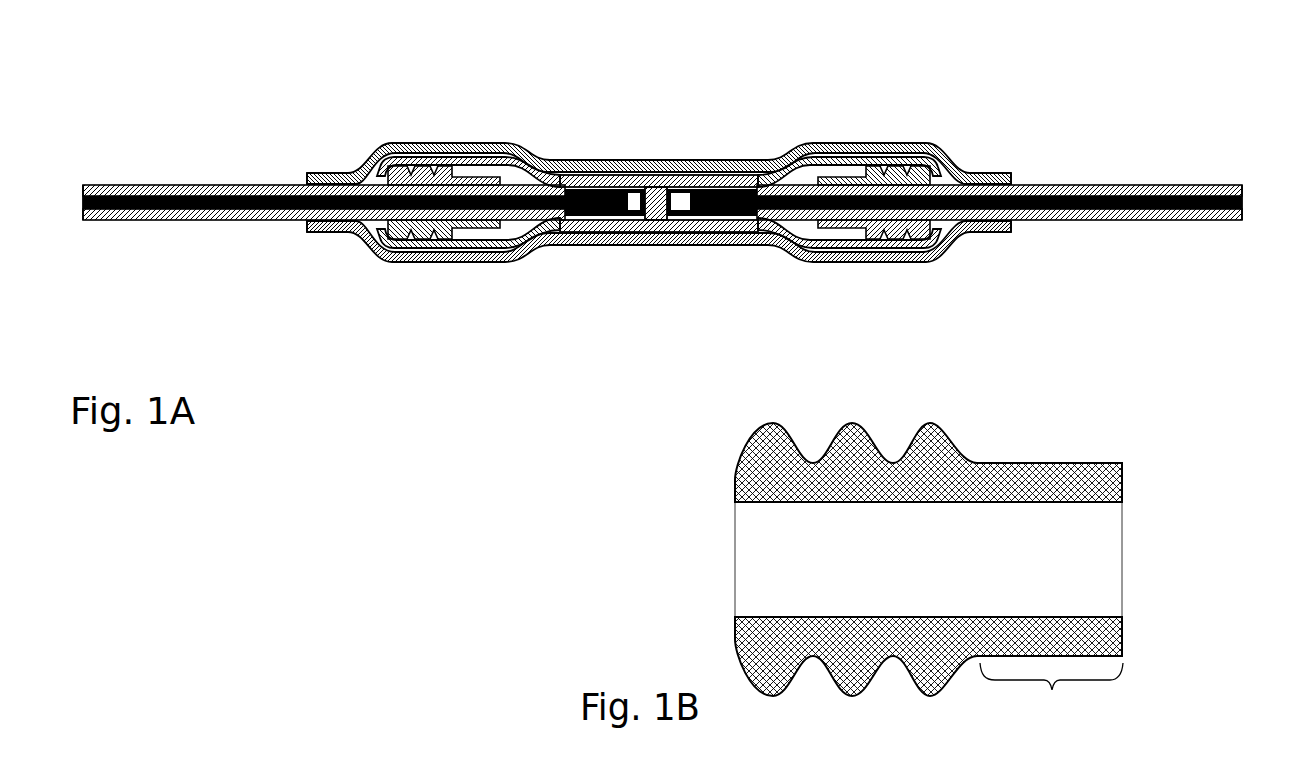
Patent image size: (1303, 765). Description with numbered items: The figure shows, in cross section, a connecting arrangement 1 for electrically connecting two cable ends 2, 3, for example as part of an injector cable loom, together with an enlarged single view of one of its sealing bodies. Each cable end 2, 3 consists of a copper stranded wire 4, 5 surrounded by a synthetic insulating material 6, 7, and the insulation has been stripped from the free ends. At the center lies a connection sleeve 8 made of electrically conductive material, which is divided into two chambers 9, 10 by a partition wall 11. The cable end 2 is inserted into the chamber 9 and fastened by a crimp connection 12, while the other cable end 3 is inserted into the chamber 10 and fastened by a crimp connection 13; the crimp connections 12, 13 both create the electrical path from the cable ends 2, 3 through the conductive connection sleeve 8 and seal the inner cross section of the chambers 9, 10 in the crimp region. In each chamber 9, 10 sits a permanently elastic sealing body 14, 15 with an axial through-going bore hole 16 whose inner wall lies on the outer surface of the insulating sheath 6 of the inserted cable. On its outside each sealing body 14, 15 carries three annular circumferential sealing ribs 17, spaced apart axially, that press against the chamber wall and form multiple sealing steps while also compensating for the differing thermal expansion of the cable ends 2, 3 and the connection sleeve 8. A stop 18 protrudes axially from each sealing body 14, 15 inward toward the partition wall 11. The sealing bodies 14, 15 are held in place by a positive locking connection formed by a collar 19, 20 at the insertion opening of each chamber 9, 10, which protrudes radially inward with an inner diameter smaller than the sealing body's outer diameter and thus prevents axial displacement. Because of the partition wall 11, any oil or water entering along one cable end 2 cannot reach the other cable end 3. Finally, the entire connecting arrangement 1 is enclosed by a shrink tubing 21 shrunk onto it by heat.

In FIG. 1A, the connecting arrangement 1 is at (657, 64).
In FIG. 1A, the cable end 2 is at (178, 241).
In FIG. 1A, the cable end 3 is at (1159, 243).
In FIG. 1A, the stranded wire 4 is at (83, 204).
In FIG. 1A, the stranded wire 5 is at (1243, 202).
In FIG. 1A, the insulating material 6 is at (167, 185).
In FIG. 1A, the insulating material 7 is at (1110, 185).
In FIG. 1A, the connection sleeve 8 is at (690, 234).
In FIG. 1A, the chamber 9 is at (528, 255).
In FIG. 1A, the chamber 10 is at (798, 254).
In FIG. 1A, the partition wall 11 is at (672, 174).
In FIG. 1A, the crimp connection 12 is at (586, 189).
In FIG. 1A, the crimp connection 13 is at (742, 189).
In FIG. 1A, the sealing body 14 is at (408, 256).
In FIG. 1B, the sealing body 14 is at (694, 485).
In FIG. 1A, the sealing body 15 is at (852, 248).
In FIG. 1B, the through-going bore hole 16 is at (1068, 568).
In FIG. 1B, the sealing ribs 17 is at (933, 422).
In FIG. 1B, the stop 18 is at (1051, 699).
In FIG. 1A, the collar 19 is at (365, 247).
In FIG. 1A, the collar 20 is at (966, 238).
In FIG. 1A, the shrink tubing 21 is at (412, 143).